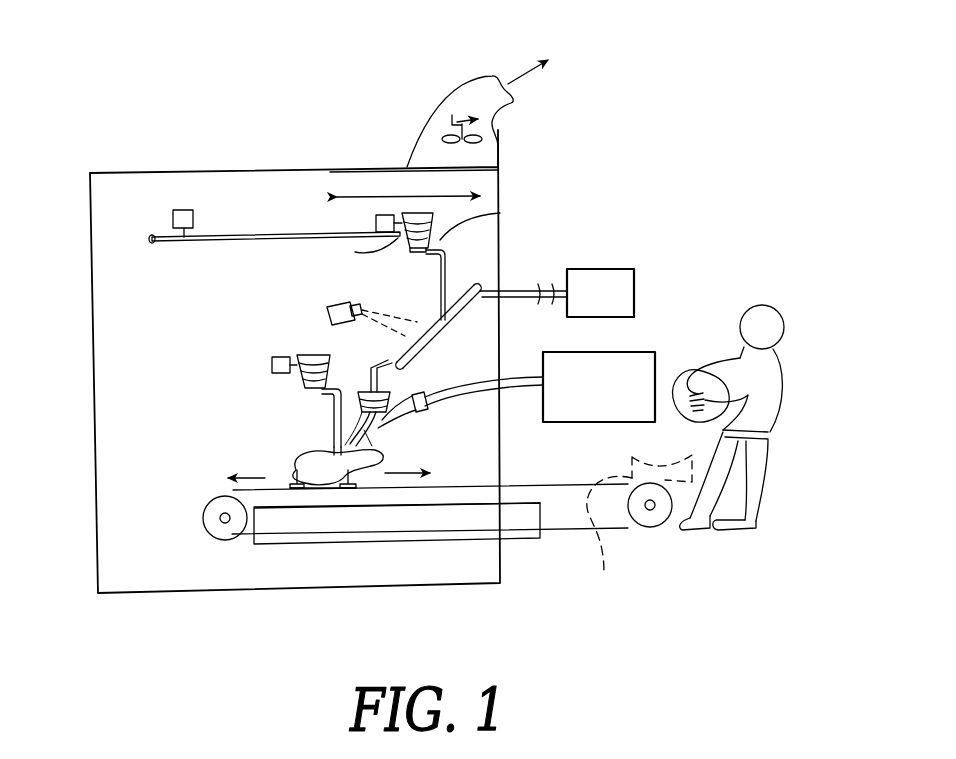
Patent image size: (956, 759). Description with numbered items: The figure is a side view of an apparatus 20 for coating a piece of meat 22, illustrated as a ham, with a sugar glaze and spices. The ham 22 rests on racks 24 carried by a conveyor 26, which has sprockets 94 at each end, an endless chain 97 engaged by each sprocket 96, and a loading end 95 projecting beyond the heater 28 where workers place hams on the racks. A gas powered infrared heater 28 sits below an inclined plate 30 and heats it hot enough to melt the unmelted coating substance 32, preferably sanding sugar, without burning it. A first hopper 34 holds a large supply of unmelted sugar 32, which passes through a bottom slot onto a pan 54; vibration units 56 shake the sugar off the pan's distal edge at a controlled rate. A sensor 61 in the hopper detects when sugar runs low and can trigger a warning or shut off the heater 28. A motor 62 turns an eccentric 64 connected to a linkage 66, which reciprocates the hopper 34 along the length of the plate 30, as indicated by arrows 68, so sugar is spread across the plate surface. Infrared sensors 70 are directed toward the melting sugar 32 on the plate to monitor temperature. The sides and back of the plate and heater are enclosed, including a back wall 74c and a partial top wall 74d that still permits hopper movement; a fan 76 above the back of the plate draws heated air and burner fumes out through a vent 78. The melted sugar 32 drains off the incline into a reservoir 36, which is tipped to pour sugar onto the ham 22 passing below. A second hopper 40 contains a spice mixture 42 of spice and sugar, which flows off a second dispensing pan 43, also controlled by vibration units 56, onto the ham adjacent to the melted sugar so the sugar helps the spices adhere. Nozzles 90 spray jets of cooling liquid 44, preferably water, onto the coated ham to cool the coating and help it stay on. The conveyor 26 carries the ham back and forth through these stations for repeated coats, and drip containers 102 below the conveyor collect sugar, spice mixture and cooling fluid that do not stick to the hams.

The apparatus 20 is at (777, 158).
The piece of meat 22 is at (378, 461).
The racks 24 is at (335, 490).
The conveyor 26 is at (668, 532).
The heater 28 is at (500, 333).
The inclined plate 30 is at (468, 276).
The coating substance 32 is at (360, 253).
The first hopper 34 is at (500, 213).
The reservoir 36 is at (367, 385).
The second hopper 40 is at (276, 357).
The spice mixture 42 is at (325, 388).
The second dispensing pan 43 is at (310, 395).
The cooling liquid 44 is at (377, 428).
The pan 54 is at (415, 252).
The vibration units 56 is at (376, 223).
The sensor 61 is at (450, 250).
The motor 62 is at (178, 212).
The eccentric 64 is at (156, 237).
The linkage 66 is at (256, 236).
The arrows 68 is at (500, 173).
The sensors 70 is at (327, 312).
The back wall 74c is at (500, 191).
The top wall 74d is at (372, 170).
The fan 76 is at (487, 137).
The vent 78 is at (492, 76).
The nozzles 90 is at (500, 356).
The sprockets 94 is at (217, 530).
The loading end 95 is at (750, 550).
The sprocket 96 is at (296, 490).
The endless chain 97 is at (432, 522).
The drip containers 102 is at (520, 522).